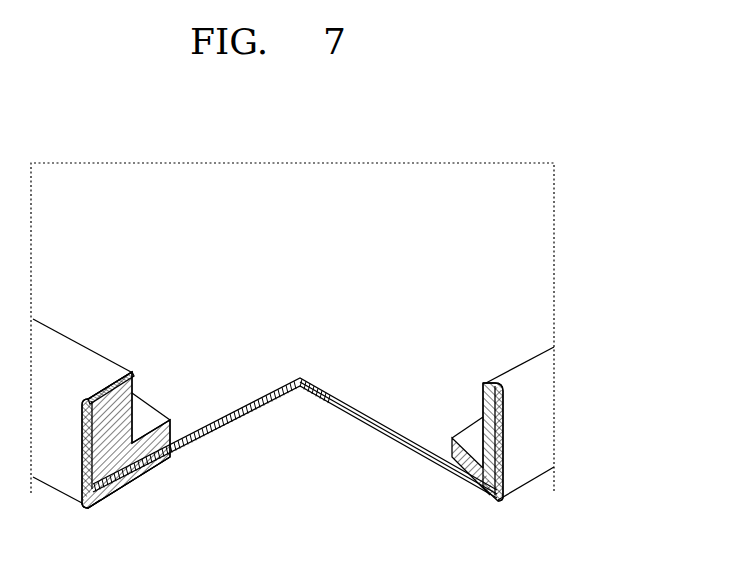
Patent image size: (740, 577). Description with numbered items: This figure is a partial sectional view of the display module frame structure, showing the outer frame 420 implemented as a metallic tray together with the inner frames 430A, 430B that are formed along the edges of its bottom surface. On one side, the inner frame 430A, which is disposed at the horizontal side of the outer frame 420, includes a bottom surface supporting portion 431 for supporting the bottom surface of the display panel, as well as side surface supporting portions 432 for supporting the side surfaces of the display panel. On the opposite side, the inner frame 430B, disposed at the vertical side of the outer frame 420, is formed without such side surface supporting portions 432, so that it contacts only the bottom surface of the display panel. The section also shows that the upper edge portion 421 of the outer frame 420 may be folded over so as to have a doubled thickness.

The outer frame 420 is at (267, 403).
The upper edge portion 421 is at (503, 418).
The inner frame 430A is at (198, 516).
The inner frame 430B is at (460, 473).
The bottom surface supporting portion 431 is at (183, 457).
The side surface supporting portions 432 is at (160, 475).